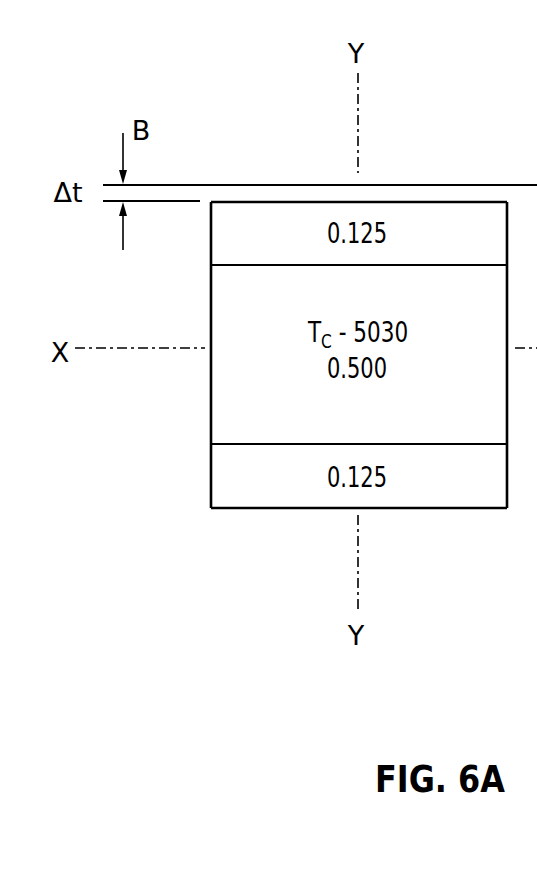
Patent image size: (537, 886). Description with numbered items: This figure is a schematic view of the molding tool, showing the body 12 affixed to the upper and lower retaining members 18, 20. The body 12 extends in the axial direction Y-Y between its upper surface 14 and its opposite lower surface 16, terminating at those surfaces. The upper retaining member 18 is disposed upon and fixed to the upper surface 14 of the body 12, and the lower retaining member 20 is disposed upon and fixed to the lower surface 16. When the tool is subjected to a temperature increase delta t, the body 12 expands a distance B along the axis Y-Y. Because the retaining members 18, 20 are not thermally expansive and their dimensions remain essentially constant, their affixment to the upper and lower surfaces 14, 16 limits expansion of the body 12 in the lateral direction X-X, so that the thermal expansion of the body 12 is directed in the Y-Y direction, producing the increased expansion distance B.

The body 12 is at (245, 397).
The upper surface 14 is at (262, 265).
The lower surface 16 is at (240, 444).
The upper retaining member 18 is at (297, 202).
The lower retaining member 20 is at (240, 510).